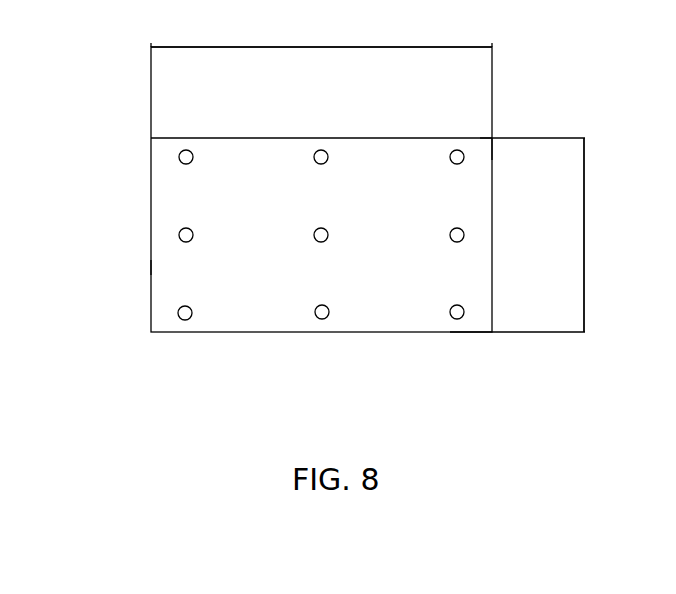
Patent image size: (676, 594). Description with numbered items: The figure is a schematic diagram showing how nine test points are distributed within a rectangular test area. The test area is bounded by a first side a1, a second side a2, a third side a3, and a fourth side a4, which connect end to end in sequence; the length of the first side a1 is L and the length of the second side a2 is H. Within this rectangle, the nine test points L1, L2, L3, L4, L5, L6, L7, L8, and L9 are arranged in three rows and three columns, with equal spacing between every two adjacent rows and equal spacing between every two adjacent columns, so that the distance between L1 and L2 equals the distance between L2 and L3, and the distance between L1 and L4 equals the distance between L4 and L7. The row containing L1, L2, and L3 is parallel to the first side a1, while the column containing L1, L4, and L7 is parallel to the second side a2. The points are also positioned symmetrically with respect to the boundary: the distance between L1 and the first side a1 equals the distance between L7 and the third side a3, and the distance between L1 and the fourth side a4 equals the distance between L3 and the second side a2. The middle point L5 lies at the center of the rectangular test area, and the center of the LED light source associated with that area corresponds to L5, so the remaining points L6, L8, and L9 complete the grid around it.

The length of the first side L is at (321, 32).
The length of the second side H is at (569, 235).
The test point L1 is at (186, 150).
The test point L2 is at (320, 150).
The test point L3 is at (457, 150).
The test point L4 is at (180, 231).
The test point L5 is at (325, 240).
The test point L6 is at (463, 230).
The test point L7 is at (184, 320).
The test point L8 is at (320, 319).
The test point L9 is at (462, 316).
The first side a1 is at (474, 137).
The second side a2 is at (491, 166).
The third side a3 is at (456, 333).
The fourth side a4 is at (150, 267).